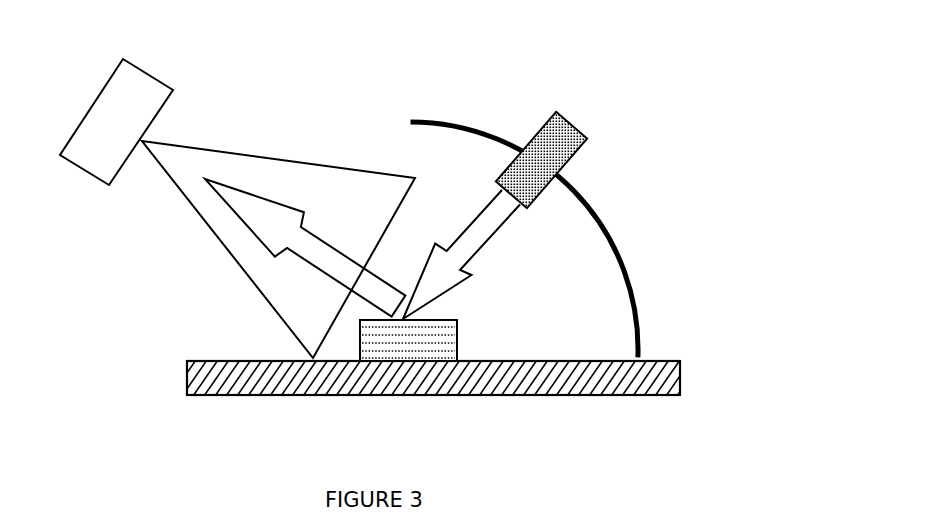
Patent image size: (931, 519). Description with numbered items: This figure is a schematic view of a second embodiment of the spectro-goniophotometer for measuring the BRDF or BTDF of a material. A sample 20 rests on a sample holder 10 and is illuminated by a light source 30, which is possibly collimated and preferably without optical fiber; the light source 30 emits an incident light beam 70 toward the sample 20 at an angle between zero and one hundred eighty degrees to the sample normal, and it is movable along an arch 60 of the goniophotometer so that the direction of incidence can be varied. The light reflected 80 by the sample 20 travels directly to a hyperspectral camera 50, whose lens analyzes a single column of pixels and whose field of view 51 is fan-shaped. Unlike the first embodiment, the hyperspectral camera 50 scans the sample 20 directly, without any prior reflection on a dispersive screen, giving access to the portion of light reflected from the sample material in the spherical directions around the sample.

The sample holder 10 is at (684, 379).
The sample 20 is at (461, 353).
The light source 30 is at (585, 141).
The hyperspectral camera 50 is at (153, 72).
The field of view 51 is at (261, 150).
The arch 60 is at (636, 293).
The incident light beam 70 is at (492, 242).
The reflected light 80 is at (303, 263).